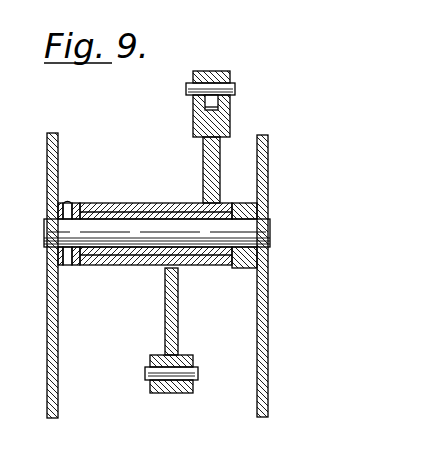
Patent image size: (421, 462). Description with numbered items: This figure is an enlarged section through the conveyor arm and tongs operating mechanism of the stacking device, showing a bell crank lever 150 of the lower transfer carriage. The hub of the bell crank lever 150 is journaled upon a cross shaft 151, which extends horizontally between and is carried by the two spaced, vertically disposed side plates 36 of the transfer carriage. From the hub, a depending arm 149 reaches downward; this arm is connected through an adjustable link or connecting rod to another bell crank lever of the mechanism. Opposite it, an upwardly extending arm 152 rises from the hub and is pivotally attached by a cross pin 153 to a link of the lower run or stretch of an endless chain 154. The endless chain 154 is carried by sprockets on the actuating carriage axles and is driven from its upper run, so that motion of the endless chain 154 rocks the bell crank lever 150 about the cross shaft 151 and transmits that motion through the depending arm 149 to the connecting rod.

The side plates 36 is at (60, 339).
The depending arm 149 is at (179, 296).
The bell crank lever 150 is at (111, 203).
The cross shaft 151 is at (158, 238).
The upwardly extending arm 152 is at (202, 152).
The cross pin 153 is at (237, 88).
The endless chain 154 is at (205, 71).